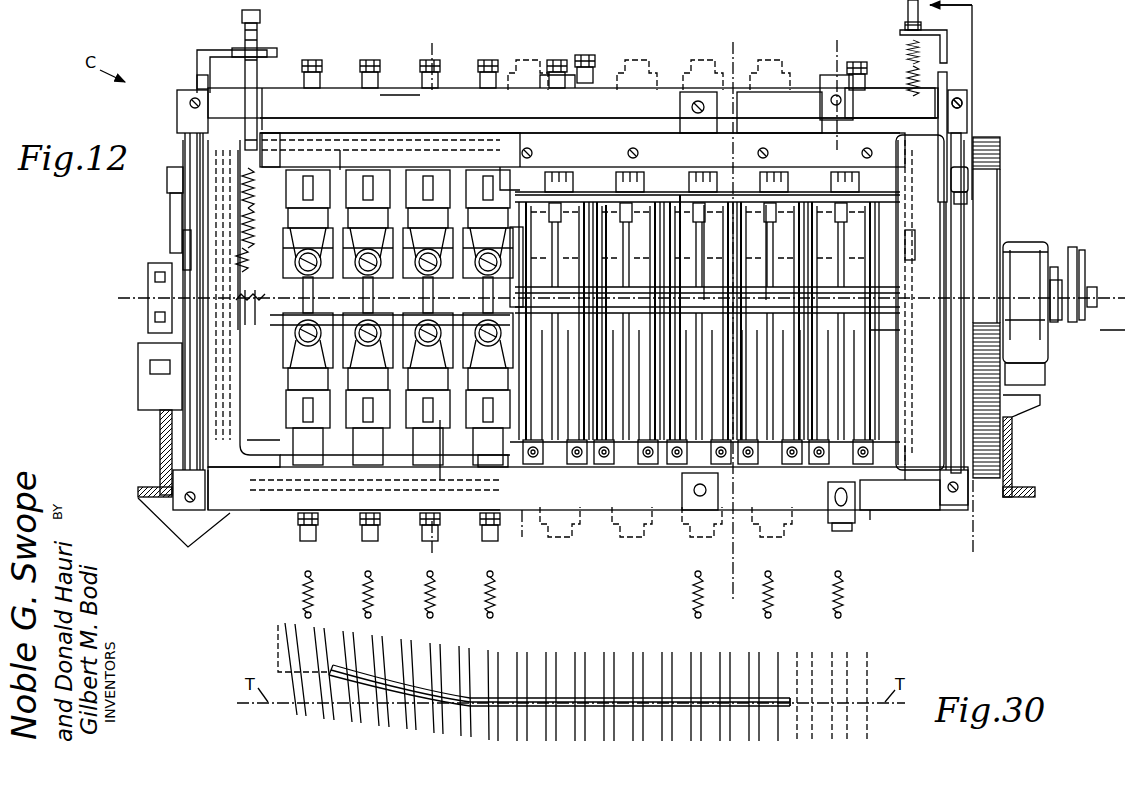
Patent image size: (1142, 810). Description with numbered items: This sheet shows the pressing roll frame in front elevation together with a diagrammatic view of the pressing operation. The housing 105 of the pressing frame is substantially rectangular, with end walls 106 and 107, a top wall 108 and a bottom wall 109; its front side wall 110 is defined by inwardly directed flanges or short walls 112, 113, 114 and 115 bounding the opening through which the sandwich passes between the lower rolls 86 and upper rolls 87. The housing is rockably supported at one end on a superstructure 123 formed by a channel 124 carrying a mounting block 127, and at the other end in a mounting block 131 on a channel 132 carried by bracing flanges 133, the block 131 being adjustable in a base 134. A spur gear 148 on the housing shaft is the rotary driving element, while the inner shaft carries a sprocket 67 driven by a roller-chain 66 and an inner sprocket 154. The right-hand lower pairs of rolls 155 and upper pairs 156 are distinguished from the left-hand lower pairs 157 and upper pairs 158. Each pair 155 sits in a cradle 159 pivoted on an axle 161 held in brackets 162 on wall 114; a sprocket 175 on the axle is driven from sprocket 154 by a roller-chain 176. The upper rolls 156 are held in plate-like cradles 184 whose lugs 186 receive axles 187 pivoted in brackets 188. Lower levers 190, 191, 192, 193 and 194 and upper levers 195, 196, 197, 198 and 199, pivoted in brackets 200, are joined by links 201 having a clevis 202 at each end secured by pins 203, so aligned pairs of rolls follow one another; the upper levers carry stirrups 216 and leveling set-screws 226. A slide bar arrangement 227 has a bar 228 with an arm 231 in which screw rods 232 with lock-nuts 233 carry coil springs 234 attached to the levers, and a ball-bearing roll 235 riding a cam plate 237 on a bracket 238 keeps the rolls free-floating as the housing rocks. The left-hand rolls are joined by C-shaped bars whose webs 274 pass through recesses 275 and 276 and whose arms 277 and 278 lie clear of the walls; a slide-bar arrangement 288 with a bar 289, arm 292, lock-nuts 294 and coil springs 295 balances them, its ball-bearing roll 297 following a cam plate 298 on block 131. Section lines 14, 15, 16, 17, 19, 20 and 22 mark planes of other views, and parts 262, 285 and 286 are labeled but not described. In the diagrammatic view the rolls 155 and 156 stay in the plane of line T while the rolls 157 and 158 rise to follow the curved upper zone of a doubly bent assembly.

In FIG. 12, the section line 14 is at (878, 337).
In FIG. 12, the section line 15 is at (118, 330).
In FIG. 12, the section line 16 is at (917, 553).
In FIG. 12, the section line 17 is at (733, 42).
In FIG. 12, the section line 19 is at (868, 42).
In FIG. 12, the section line 20 is at (863, 456).
In FIG. 12, the section line 22 is at (432, 43).
In FIG. 12, the roller-chain 66 is at (1078, 255).
In FIG. 12, the sprocket 67 is at (1088, 272).
In FIG. 12, the rolls 86 is at (800, 450).
In FIG. 12, the rolls 87 is at (600, 192).
In FIG. 12, the housing 105 is at (1020, 205).
In FIG. 12, the end wall 106 is at (1005, 178).
In FIG. 12, the end wall 107 is at (215, 445).
In FIG. 12, the top wall 108 is at (490, 133).
In FIG. 12, the bottom wall 109 is at (557, 470).
In FIG. 12, the front side wall 110 is at (275, 133).
In FIG. 12, the flange 112 is at (340, 165).
In FIG. 12, the flange 113 is at (915, 250).
In FIG. 12, the flange 114 is at (488, 470).
In FIG. 12, the flange 115 is at (183, 245).
In FIG. 12, the superstructure 123 is at (1013, 465).
In FIG. 12, the channel 124 is at (1013, 450).
In FIG. 12, the mounting block 127 is at (1022, 243).
In FIG. 12, the mounting block 131 is at (150, 275).
In FIG. 12, the channel 132 is at (163, 440).
In FIG. 12, the bracing flanges 133 is at (177, 530).
In FIG. 12, the base 134 is at (170, 380).
In FIG. 12, the spur gear 148 is at (1000, 145).
In FIG. 12, the sprocket 154 is at (985, 310).
In FIG. 12, the pairs of rolls 155 is at (670, 445).
In FIG. 30, the pairs of rolls 155 is at (785, 723).
In FIG. 12, the pairs of rolls 156 is at (862, 210).
In FIG. 30, the pairs of rolls 156 is at (784, 672).
In FIG. 12, the pairs of rolls 157 is at (440, 425).
In FIG. 30, the pairs of rolls 157 is at (372, 715).
In FIG. 12, the pairs of rolls 158 is at (368, 221).
In FIG. 30, the pairs of rolls 158 is at (412, 663).
In FIG. 12, the cradle 159 is at (605, 500).
In FIG. 12, the axle 161 is at (887, 470).
In FIG. 12, the brackets 162 is at (742, 450).
In FIG. 12, the sprocket 175 is at (908, 515).
In FIG. 12, the roller-chain 176 is at (990, 405).
In FIG. 12, the support collar 184 is at (678, 200).
In FIG. 12, the lug 186 is at (705, 200).
In FIG. 12, the axle 187 is at (768, 190).
In FIG. 12, the brackets 188 is at (530, 190).
In FIG. 12, the lever 190 is at (905, 500).
In FIG. 12, the lever 191 is at (645, 520).
In FIG. 12, the lever 192 is at (580, 520).
In FIG. 12, the lever 193 is at (522, 515).
In FIG. 12, the lever 194 is at (230, 500).
In FIG. 12, the lever 195 is at (790, 105).
In FIG. 12, the lever 196 is at (672, 88).
In FIG. 12, the lever 197 is at (600, 88).
In FIG. 12, the lever 198 is at (520, 85).
In FIG. 12, the lever 199 is at (400, 100).
In FIG. 12, the brackets 200 is at (698, 105).
In FIG. 12, the links 201 is at (185, 150).
In FIG. 12, the clevis 202 is at (198, 115).
In FIG. 12, the pins 203 is at (968, 100).
In FIG. 12, the stirrup 216 is at (852, 98).
In FIG. 12, the leveling set-screw 226 is at (905, 60).
In FIG. 12, the slide bar arrangement 227 is at (1012, 45).
In FIG. 12, the slide bar 228 is at (947, 82).
In FIG. 12, the arm 231 is at (925, 36).
In FIG. 12, the screw rods 232 is at (908, 5).
In FIG. 12, the lock-nut 233 is at (905, 25).
In FIG. 12, the coil spring 234 is at (915, 78).
In FIG. 30, the coil spring 234 is at (704, 602).
In FIG. 12, the ball-bearing roll 235 is at (968, 178).
In FIG. 12, the cam plate 237 is at (975, 205).
In FIG. 12, the bracket 238 is at (1025, 405).
In FIG. 12, the screw 262 is at (485, 168).
In FIG. 12, the web 274 is at (250, 432).
In FIG. 12, the recess 275 is at (235, 130).
In FIG. 12, the recess 276 is at (258, 462).
In FIG. 12, the arm 277 is at (295, 88).
In FIG. 12, the arm 278 is at (280, 520).
In FIG. 12, the bolt 285 is at (314, 62).
In FIG. 12, the bolt 286 is at (442, 80).
In FIG. 12, the slide-bar arrangement 288 is at (207, 47).
In FIG. 12, the slide bar 289 is at (197, 80).
In FIG. 12, the arm 292 is at (225, 50).
In FIG. 12, the lock-nut 294 is at (265, 50).
In FIG. 12, the coil spring 295 is at (250, 225).
In FIG. 30, the coil spring 295 is at (302, 602).
In FIG. 12, the ball-bearing roll 297 is at (170, 178).
In FIG. 12, the cam plate 298 is at (172, 215).